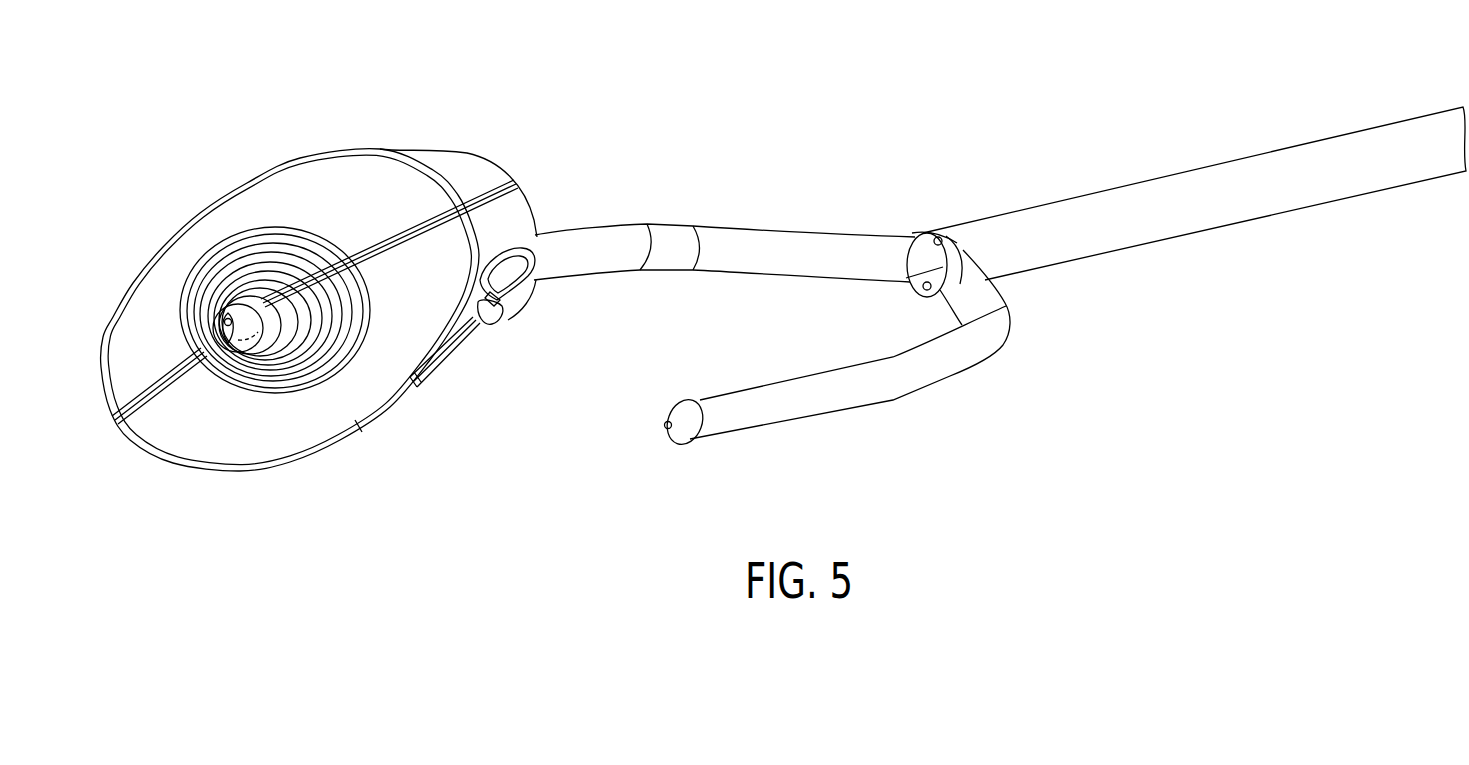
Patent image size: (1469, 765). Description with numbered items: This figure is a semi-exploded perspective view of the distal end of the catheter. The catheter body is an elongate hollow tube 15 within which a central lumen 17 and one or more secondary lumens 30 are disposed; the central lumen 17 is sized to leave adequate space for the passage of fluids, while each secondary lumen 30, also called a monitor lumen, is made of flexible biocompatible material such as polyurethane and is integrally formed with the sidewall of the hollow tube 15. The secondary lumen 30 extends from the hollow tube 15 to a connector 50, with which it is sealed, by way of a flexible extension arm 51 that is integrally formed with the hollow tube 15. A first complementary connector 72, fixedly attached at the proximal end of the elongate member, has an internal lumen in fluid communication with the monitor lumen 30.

The connector 50 is at (413, 97).
The flexible extension arm 51 is at (243, 308).
The secondary lumen 30 is at (225, 345).
The first complementary connector 72 is at (287, 347).
The central lumen 17 is at (930, 258).
The hollow tube 15 is at (1097, 190).